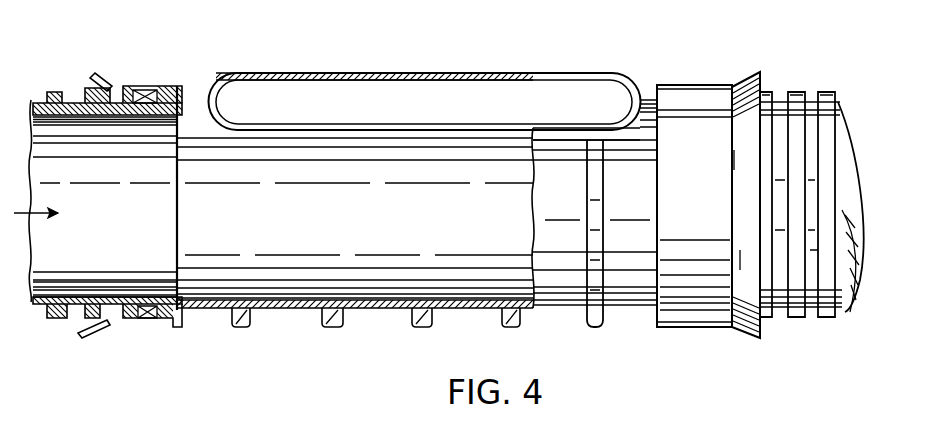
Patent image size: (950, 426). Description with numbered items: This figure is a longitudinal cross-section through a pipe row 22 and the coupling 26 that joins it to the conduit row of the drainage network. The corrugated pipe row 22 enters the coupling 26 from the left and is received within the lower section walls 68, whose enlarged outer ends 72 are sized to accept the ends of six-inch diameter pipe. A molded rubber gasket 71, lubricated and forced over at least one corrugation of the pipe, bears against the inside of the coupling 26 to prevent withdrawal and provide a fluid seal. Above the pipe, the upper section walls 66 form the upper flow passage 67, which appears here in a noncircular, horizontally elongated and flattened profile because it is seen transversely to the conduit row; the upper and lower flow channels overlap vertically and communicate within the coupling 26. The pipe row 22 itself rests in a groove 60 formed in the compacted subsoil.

The pipe row 22 is at (120, 231).
The coupling 26 is at (483, 70).
The groove 60 is at (761, 72).
The upper section walls 66 is at (362, 73).
The upper flow passage 67 is at (420, 116).
The lower section walls 68 is at (685, 84).
The molded rubber gasket 71 is at (151, 81).
The enlarged outer ends 72 is at (93, 74).